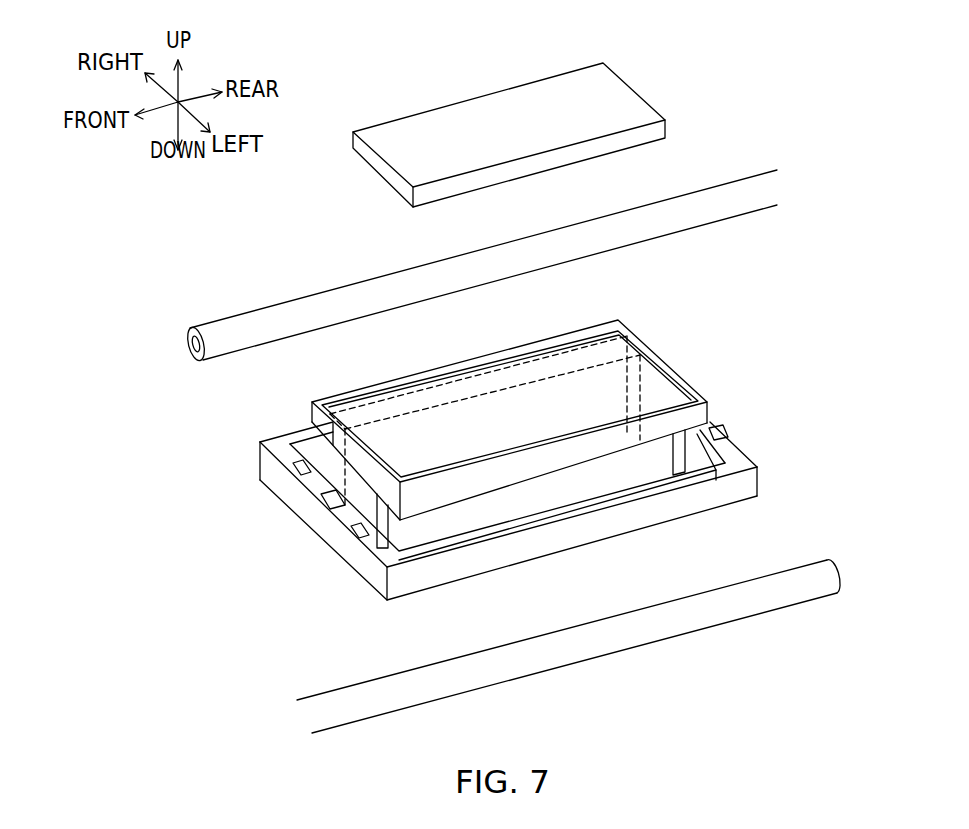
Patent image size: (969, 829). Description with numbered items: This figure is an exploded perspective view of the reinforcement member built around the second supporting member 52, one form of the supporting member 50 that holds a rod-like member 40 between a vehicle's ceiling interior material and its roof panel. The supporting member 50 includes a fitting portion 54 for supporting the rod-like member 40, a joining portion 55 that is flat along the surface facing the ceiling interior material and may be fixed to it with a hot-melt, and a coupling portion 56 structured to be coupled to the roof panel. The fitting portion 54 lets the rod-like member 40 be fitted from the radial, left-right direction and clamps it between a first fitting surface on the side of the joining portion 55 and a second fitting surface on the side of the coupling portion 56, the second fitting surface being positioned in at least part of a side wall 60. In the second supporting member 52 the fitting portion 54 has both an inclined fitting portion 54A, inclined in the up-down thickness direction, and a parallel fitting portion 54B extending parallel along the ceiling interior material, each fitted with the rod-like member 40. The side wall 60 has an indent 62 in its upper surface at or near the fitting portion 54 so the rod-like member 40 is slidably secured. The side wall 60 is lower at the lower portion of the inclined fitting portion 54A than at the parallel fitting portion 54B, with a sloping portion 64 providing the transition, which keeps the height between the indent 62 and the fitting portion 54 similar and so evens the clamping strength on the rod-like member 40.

The rod-like member 40 is at (730, 198).
The supporting member 50 is at (552, 430).
The second supporting member 52 is at (683, 378).
The fitting portion 54 is at (540, 430).
The inclined fitting portion 54A is at (568, 470).
The parallel fitting portion 54B is at (633, 338).
The joining portion 55 is at (632, 537).
The coupling portion 56 is at (490, 117).
The side wall 60 is at (479, 511).
The indent 62 is at (292, 469).
The sloping portion 64 is at (332, 508).